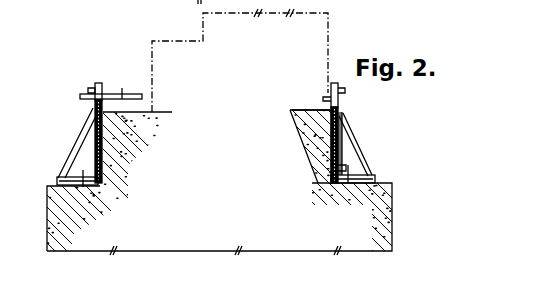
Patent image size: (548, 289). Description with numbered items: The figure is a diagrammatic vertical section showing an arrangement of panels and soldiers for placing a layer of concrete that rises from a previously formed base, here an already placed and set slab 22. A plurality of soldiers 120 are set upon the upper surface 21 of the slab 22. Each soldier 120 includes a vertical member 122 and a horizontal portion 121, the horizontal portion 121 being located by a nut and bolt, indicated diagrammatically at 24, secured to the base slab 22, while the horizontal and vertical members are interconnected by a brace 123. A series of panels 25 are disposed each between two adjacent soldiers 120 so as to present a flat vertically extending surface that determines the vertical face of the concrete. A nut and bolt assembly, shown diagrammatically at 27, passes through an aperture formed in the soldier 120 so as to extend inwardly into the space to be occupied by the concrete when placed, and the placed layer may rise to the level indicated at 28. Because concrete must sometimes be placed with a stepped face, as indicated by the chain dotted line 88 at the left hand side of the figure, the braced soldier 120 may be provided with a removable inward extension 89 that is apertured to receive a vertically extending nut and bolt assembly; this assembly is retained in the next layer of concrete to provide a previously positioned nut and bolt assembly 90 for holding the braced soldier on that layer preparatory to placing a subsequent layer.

The upper surface 21 is at (388, 181).
The slab 22 is at (384, 216).
The nut and bolt 24 is at (328, 165).
The panels 25 is at (339, 111).
The nut and bolt assembly 27 is at (318, 124).
The level of concrete layer 28 is at (308, 112).
The chain dotted line 88 is at (152, 57).
The removable inward extension 89 is at (120, 91).
The previously positioned nut and bolt assembly 90 is at (122, 88).
The soldier 120 is at (85, 132).
The horizontal portion 121 is at (374, 176).
The vertical member 122 is at (333, 83).
The brace 123 is at (356, 144).